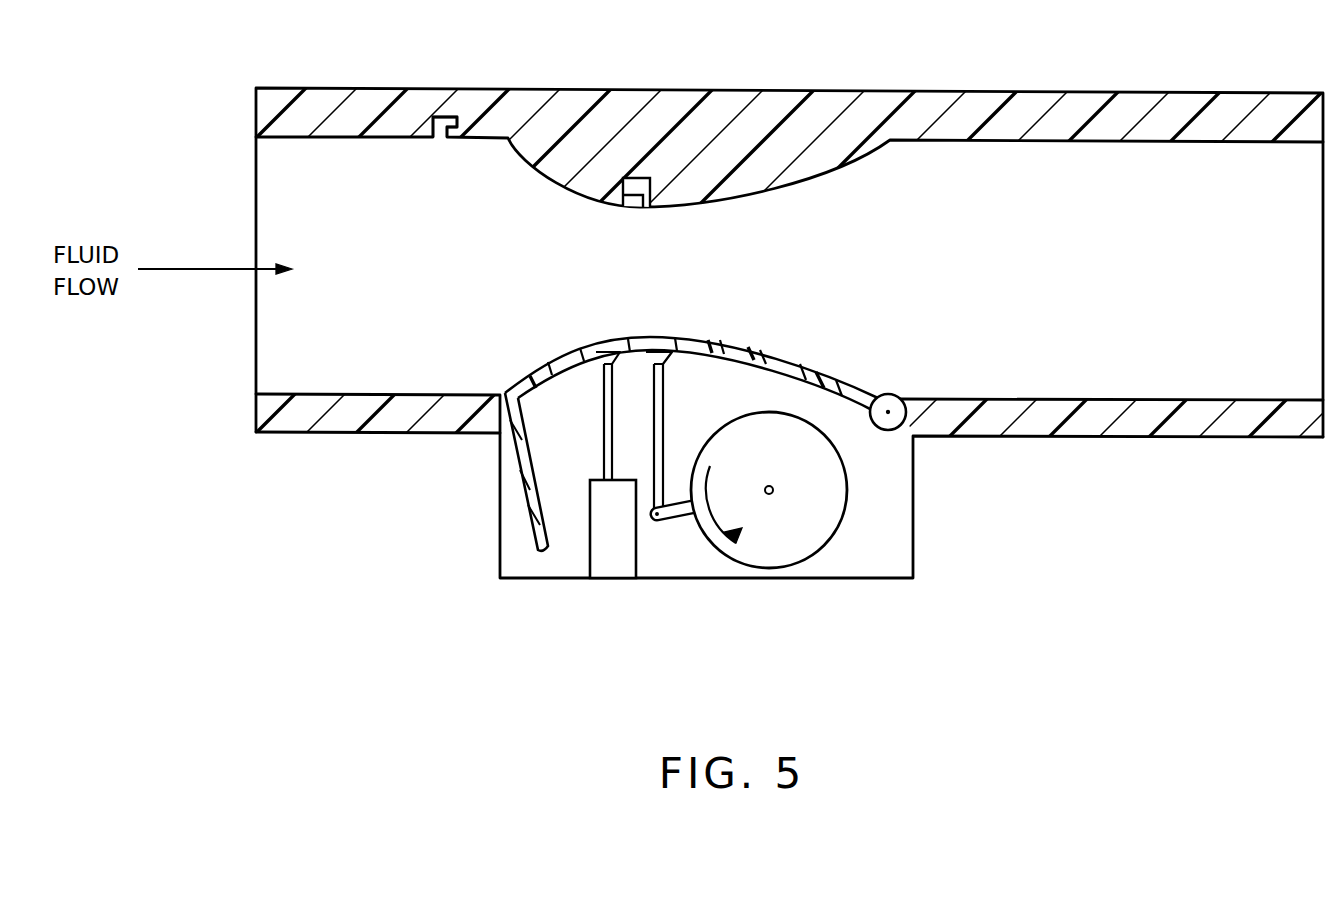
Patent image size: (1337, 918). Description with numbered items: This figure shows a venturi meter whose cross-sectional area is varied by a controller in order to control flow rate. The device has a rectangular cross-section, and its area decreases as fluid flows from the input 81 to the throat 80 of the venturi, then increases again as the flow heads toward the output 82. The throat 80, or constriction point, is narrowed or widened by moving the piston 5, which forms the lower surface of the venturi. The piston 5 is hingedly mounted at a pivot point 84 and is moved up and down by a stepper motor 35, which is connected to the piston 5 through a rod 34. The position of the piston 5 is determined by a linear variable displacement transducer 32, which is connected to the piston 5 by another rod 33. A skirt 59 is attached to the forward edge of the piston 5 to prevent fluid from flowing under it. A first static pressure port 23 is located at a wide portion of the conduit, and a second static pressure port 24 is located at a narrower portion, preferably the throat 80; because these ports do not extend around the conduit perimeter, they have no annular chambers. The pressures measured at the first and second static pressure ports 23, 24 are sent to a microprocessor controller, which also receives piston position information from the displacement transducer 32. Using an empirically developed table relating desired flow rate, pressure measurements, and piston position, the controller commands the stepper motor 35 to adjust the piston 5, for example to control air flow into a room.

The piston 5 is at (790, 363).
The first static pressure port 23 is at (452, 115).
The second static pressure port 24 is at (637, 178).
The linear variable displacement transducer 32 is at (615, 560).
The rod 33 is at (605, 445).
The rod 34 is at (665, 437).
The stepper motor 35 is at (775, 538).
The skirt 59 is at (512, 520).
The throat 80 is at (636, 292).
The input 81 is at (300, 219).
The output 82 is at (1242, 245).
The pivot point 84 is at (897, 394).